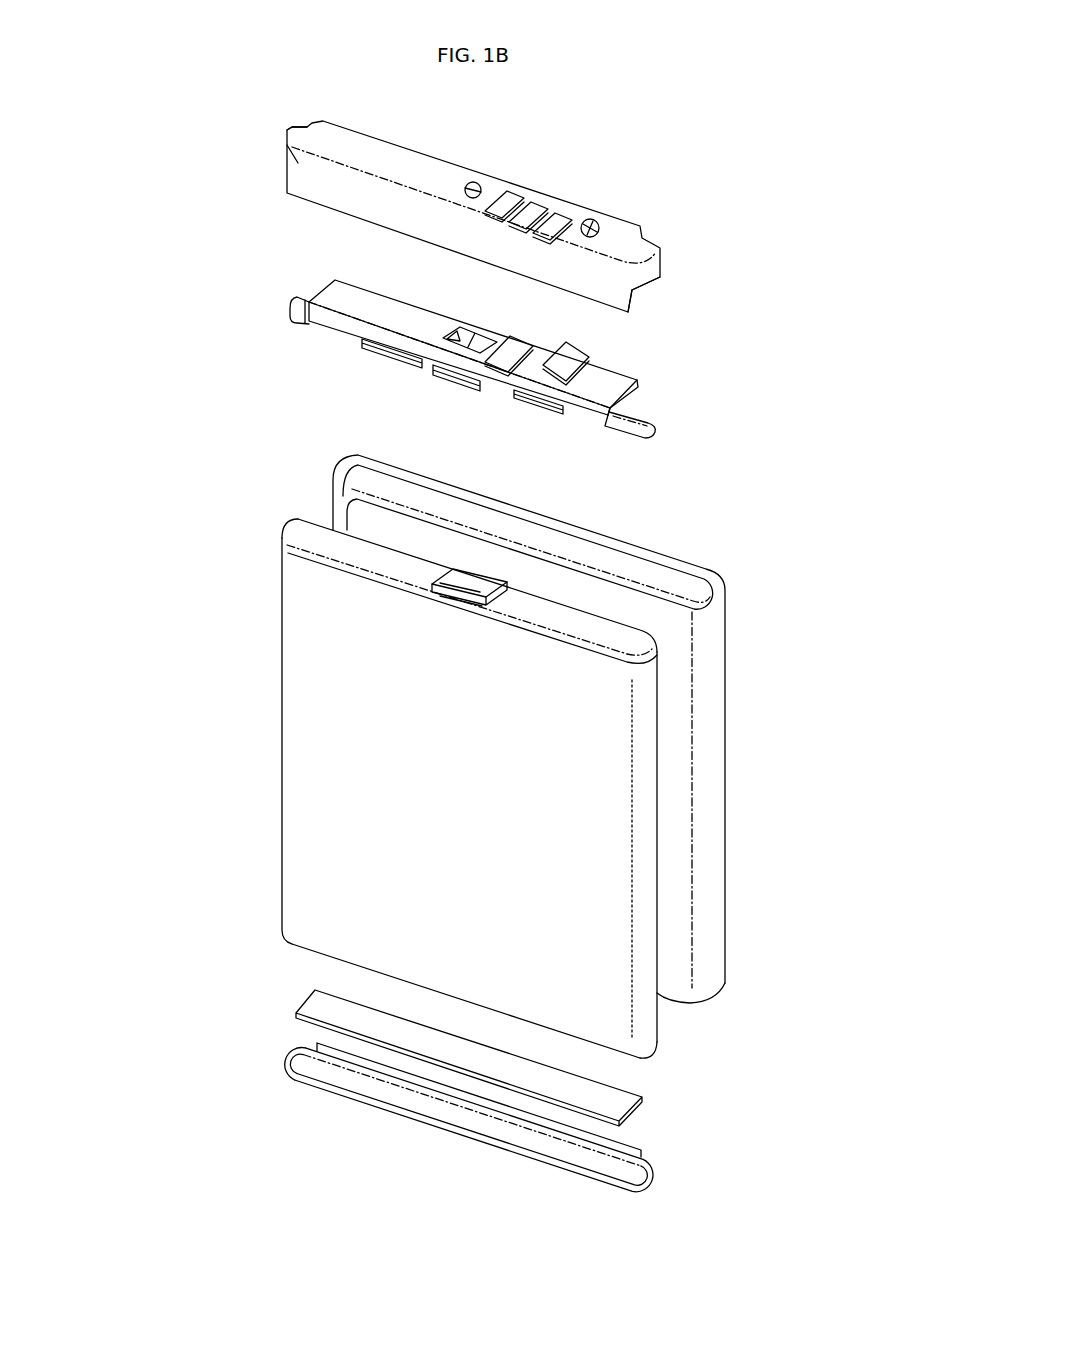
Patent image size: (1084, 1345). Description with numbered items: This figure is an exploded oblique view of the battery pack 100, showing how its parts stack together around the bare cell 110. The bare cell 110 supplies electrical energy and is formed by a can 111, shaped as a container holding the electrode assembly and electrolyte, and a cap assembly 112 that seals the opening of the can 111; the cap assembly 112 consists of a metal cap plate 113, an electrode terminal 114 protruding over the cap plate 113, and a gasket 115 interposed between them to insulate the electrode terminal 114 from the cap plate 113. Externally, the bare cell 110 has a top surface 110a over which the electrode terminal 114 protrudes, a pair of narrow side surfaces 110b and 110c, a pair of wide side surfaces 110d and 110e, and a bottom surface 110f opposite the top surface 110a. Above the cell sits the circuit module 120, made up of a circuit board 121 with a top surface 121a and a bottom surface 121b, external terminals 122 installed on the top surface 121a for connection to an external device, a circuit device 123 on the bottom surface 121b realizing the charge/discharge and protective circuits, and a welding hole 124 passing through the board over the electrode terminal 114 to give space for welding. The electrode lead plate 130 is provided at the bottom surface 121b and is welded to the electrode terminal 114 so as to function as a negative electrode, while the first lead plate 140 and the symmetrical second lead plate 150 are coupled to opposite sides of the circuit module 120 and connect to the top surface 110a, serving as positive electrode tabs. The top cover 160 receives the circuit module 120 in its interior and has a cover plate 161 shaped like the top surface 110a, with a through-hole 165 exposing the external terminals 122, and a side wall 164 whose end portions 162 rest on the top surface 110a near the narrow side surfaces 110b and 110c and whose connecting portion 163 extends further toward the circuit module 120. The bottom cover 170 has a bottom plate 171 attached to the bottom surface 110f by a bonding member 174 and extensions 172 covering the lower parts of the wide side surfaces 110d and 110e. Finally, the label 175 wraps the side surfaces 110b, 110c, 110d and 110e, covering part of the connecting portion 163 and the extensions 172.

The battery pack 100 is at (727, 111).
The bare cell 110 is at (282, 757).
The top surface 110a is at (297, 530).
The narrow side surface 110b is at (282, 692).
The narrow side surface 110c is at (645, 853).
The wide side surface 110d is at (335, 825).
The wide side surface 110e is at (658, 1016).
The bottom surface 110f is at (645, 1057).
The can 111 is at (306, 879).
The cap assembly 112 is at (218, 548).
The cap plate 113 is at (447, 570).
The electrode terminal 114 is at (440, 588).
The gasket 115 is at (437, 595).
The circuit module 120 is at (646, 380).
The circuit board 121 is at (330, 279).
The top surface 121a is at (390, 307).
The bottom surface 121b is at (337, 330).
The external terminals 122 is at (542, 358).
The circuit device 123 is at (373, 348).
The welding hole 124 is at (473, 340).
The electrode lead plate 130 is at (457, 377).
The first lead plate 140 is at (653, 417).
The second lead plate 150 is at (292, 305).
The top cover 160 is at (636, 219).
The cover plate 161 is at (410, 160).
The end portions 162 is at (283, 147).
The connecting portion 163 is at (632, 300).
The side wall 164 is at (300, 163).
The through-hole 165 is at (506, 203).
The bottom cover 170 is at (653, 1178).
The bottom plate 171 is at (288, 1056).
The extensions 172 is at (383, 1072).
The bonding member 174 is at (623, 1105).
The label 175 is at (712, 720).